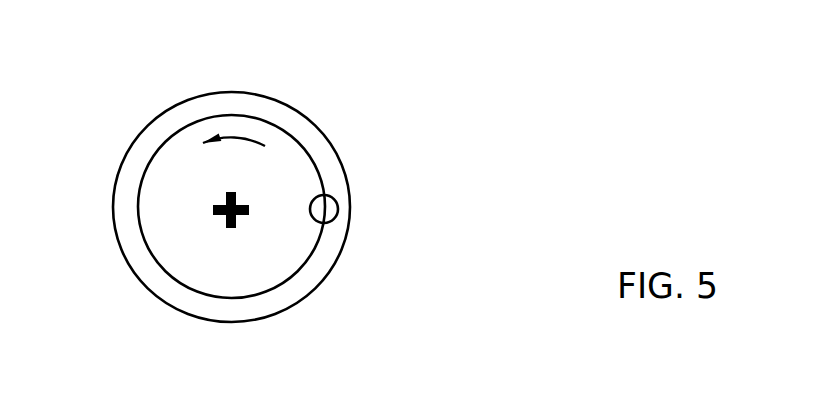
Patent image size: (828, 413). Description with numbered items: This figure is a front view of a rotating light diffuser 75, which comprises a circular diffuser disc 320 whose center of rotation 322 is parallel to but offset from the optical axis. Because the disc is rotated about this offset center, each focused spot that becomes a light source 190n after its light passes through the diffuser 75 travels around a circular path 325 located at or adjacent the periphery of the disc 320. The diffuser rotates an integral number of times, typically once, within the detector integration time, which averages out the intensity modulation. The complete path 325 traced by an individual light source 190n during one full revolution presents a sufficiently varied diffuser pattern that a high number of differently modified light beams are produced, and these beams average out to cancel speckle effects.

The diffuser 75 is at (299, 178).
The circular diffuser disc 320 is at (303, 117).
The circular path 325 is at (138, 208).
The center of rotation 322 is at (223, 203).
The light source 190n is at (327, 208).